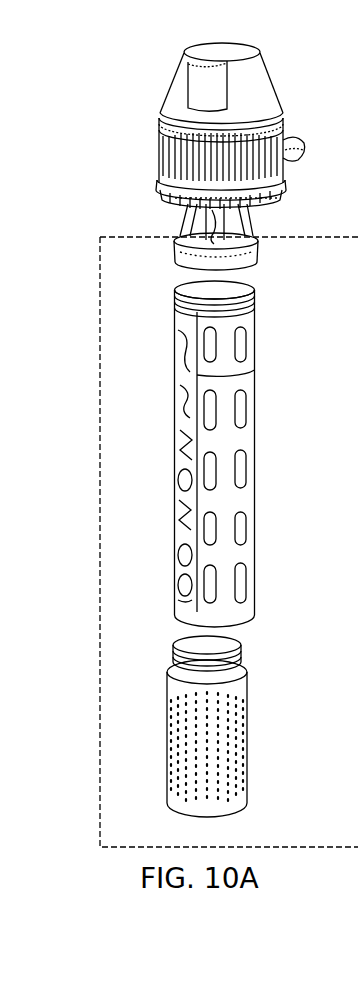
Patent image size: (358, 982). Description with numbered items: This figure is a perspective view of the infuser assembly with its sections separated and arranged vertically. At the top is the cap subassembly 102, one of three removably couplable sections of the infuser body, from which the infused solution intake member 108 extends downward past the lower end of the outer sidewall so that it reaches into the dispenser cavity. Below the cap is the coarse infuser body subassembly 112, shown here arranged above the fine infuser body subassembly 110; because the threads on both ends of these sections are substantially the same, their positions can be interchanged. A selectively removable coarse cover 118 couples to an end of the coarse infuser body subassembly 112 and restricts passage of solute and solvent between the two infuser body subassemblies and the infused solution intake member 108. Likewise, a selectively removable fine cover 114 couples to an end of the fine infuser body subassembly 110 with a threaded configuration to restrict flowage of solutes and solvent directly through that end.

The cap subassembly 102 is at (128, 147).
The infused solution intake member 108 is at (143, 219).
The coarse infuser body subassembly 112 is at (148, 497).
The coarse cover 118 is at (250, 291).
The fine infuser body subassembly 110 is at (148, 734).
The fine cover 114 is at (218, 644).